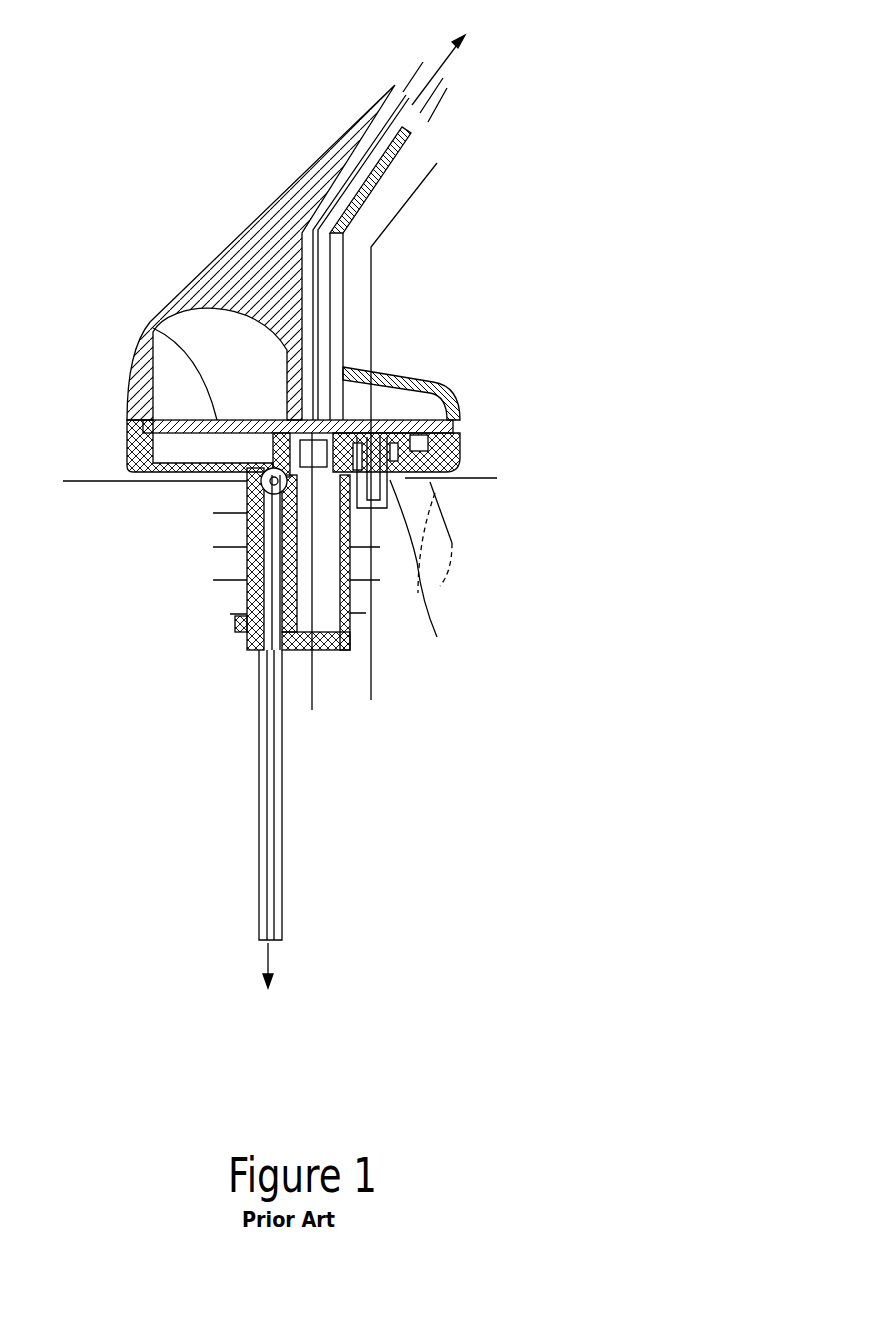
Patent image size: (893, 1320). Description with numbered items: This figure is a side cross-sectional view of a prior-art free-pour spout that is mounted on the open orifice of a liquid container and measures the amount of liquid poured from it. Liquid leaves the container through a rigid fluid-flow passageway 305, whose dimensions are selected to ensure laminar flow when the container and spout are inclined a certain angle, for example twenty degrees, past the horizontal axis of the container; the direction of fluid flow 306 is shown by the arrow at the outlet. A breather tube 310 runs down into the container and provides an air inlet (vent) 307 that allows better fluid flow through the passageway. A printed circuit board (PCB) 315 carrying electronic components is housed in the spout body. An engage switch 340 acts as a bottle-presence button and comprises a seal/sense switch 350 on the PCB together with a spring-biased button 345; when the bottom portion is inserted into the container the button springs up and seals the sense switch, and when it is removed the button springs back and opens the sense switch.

The rigid fluid-flow passageway 305 is at (380, 137).
The direction of fluid flow 306 is at (470, 60).
The air inlet (vent) 307 is at (265, 986).
The breather tube 310 is at (258, 804).
The printed circuit board (PCB) 315 is at (150, 322).
The engage switch 340 is at (426, 583).
The spring-biased button 345 is at (428, 566).
The seal/sense switch 350 is at (360, 571).